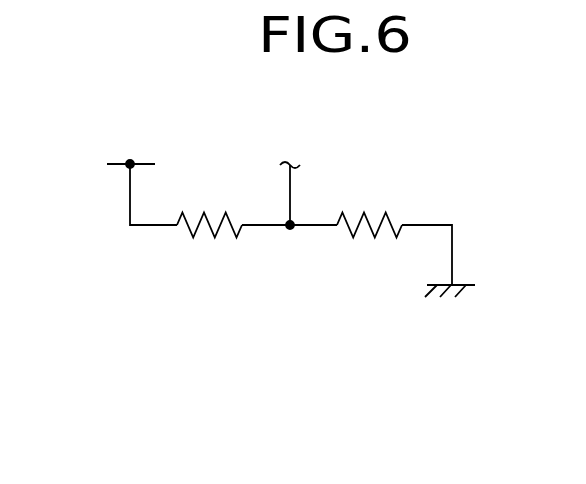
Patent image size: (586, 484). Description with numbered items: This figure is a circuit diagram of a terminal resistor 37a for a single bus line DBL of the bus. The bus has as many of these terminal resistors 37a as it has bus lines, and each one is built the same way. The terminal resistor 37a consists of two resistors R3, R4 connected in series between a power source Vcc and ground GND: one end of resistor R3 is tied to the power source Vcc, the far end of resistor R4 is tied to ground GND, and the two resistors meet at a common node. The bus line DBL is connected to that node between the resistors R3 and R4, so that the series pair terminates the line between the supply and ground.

The terminal resistor 37a is at (477, 210).
The resistor R3 is at (204, 237).
The resistor R4 is at (364, 237).
The bus line DBL is at (290, 193).
The power source Vcc is at (108, 160).
The ground GND is at (479, 284).